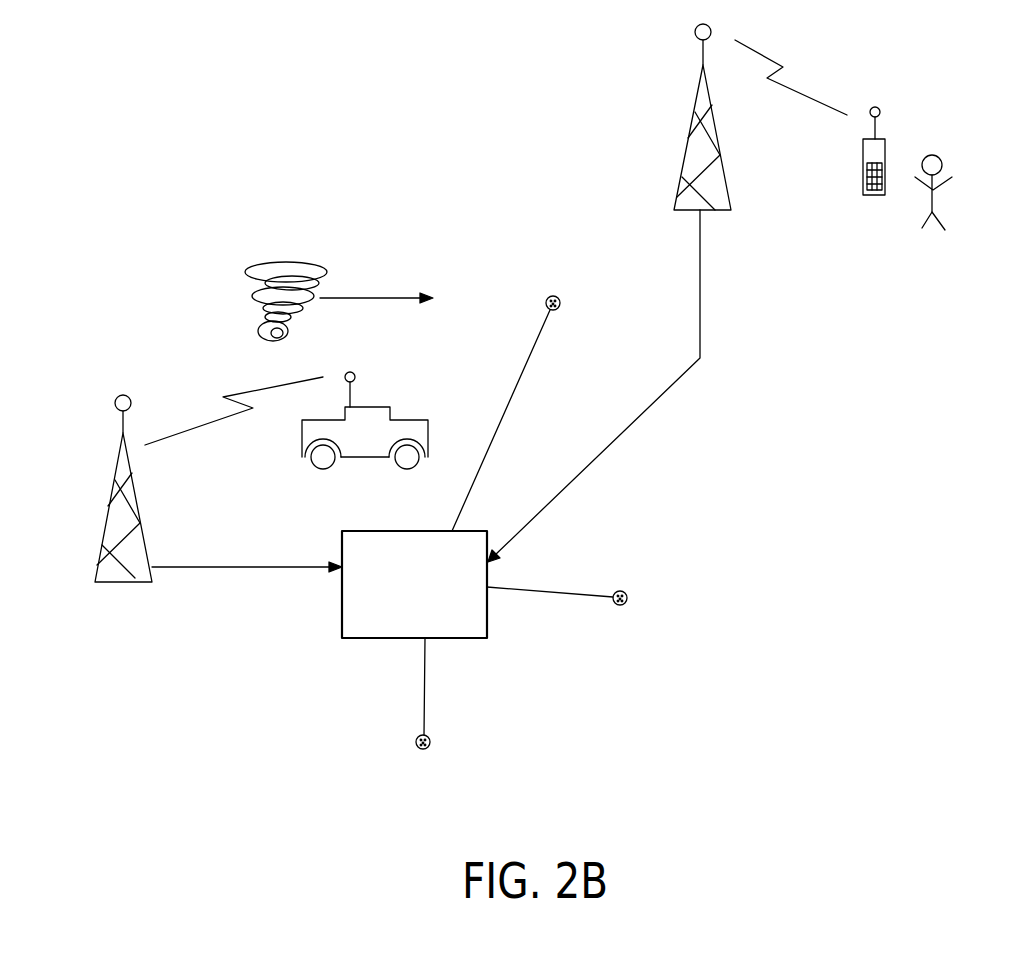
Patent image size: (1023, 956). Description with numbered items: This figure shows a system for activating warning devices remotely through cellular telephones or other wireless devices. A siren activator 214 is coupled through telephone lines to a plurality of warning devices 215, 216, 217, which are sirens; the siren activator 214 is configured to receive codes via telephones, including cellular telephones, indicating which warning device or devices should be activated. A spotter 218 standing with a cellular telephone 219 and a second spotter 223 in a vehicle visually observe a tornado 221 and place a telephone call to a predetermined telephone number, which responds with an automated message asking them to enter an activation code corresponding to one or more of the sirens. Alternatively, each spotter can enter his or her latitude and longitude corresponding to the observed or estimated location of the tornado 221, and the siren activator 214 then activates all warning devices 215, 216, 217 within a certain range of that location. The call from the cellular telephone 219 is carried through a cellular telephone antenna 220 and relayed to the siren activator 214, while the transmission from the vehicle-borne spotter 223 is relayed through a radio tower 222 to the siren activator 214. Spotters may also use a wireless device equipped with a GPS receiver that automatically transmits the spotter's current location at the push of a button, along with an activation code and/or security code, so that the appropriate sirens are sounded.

The siren activator 214 is at (360, 638).
The warning device 215 is at (424, 749).
The warning device 216 is at (613, 592).
The warning device 217 is at (549, 297).
The spotter 218 is at (943, 165).
The cellular telephone 219 is at (868, 195).
The cellular telephone antenna 220 is at (690, 128).
The tornado 221 is at (287, 262).
The radio tower 222 is at (110, 500).
The spotter 223 is at (385, 403).